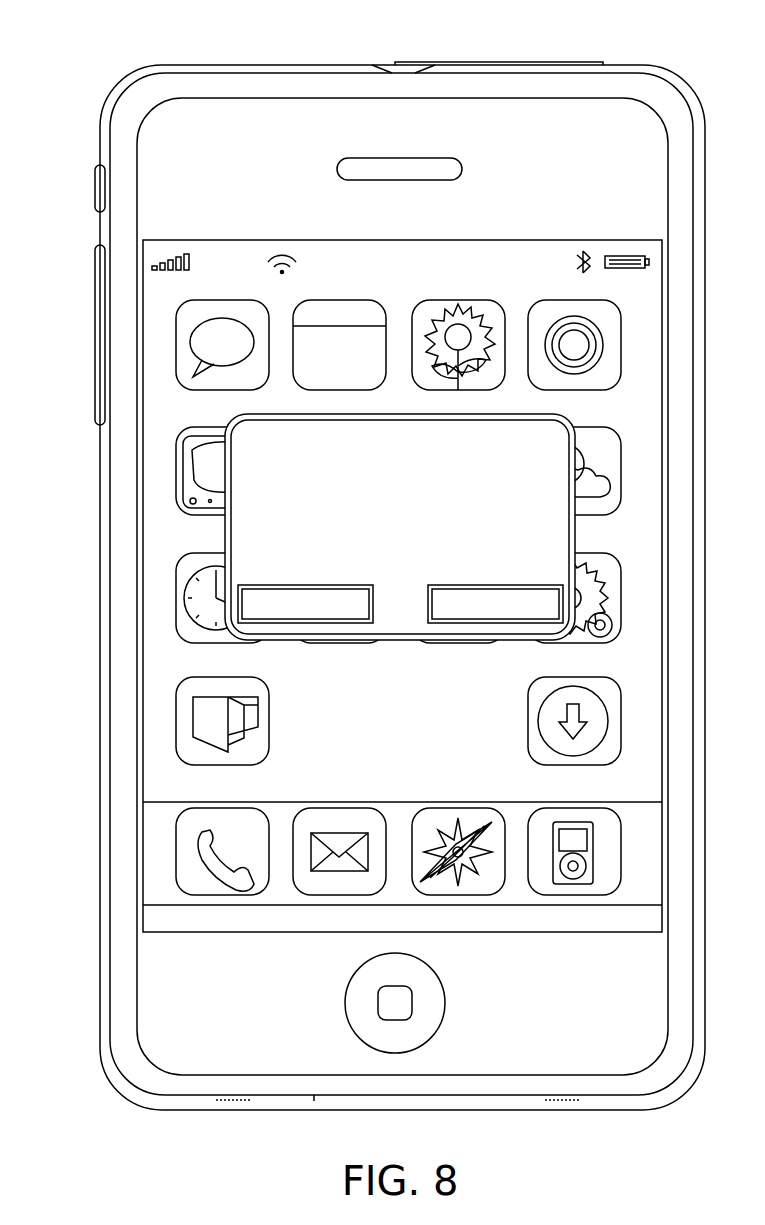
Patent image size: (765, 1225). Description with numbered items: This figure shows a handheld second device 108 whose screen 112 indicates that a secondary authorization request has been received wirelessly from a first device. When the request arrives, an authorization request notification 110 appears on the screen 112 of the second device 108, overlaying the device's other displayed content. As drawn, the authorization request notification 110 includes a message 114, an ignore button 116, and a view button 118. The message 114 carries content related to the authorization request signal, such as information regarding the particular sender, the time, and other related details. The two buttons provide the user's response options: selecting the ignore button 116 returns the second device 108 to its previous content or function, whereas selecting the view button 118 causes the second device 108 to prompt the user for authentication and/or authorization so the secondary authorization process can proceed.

The handheld electronic device 108 is at (128, 40).
The screen 112 is at (172, 287).
The authorization request notification 110 is at (225, 425).
The message 114 is at (288, 535).
The ignore button 116 is at (305, 583).
The view button 118 is at (497, 585).